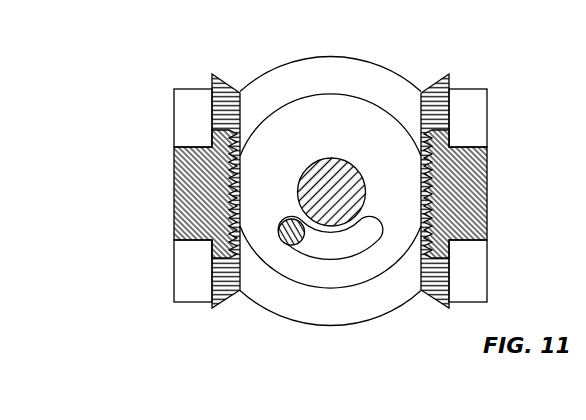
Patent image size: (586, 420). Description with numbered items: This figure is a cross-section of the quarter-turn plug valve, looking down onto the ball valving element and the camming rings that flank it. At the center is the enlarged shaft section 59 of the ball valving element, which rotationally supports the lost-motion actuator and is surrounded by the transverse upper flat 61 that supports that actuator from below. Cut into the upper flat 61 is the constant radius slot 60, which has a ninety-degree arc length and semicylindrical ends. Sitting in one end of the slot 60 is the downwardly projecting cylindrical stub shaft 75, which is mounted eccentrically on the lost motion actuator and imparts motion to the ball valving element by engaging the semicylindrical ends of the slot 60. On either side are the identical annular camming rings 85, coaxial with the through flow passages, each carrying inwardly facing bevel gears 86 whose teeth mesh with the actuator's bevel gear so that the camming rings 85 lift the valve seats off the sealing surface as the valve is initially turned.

The enlarged shaft section 59 is at (337, 173).
The constant radius slot 60 is at (331, 264).
The upper flat 61 is at (330, 223).
The cylindrical stub shaft 75 is at (256, 283).
The camming ring 85 is at (186, 217).
The bevel gear 86 is at (253, 165).